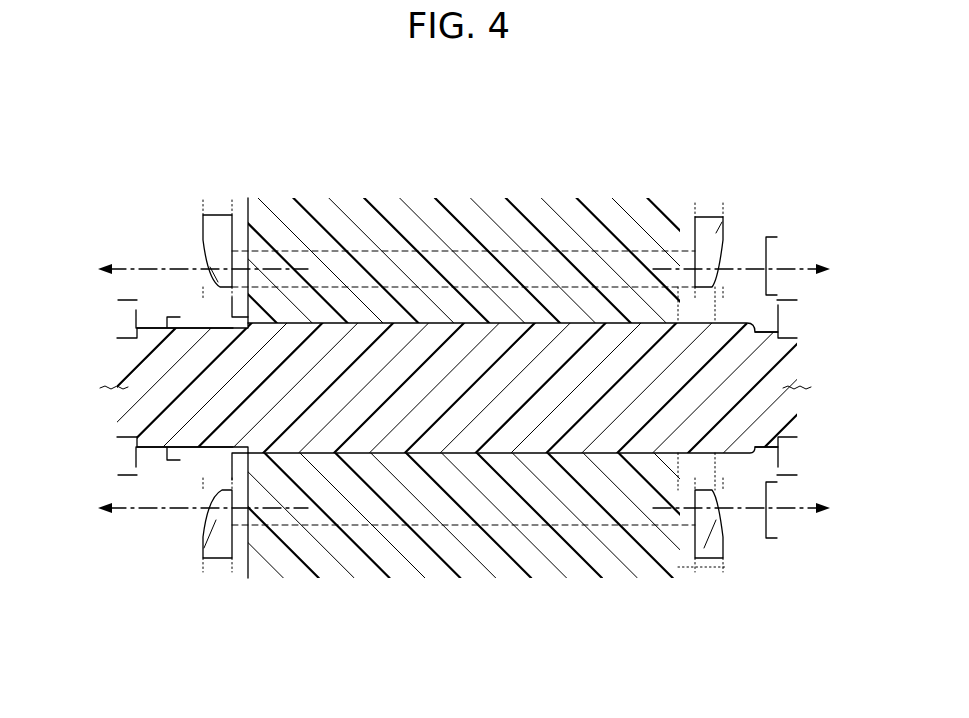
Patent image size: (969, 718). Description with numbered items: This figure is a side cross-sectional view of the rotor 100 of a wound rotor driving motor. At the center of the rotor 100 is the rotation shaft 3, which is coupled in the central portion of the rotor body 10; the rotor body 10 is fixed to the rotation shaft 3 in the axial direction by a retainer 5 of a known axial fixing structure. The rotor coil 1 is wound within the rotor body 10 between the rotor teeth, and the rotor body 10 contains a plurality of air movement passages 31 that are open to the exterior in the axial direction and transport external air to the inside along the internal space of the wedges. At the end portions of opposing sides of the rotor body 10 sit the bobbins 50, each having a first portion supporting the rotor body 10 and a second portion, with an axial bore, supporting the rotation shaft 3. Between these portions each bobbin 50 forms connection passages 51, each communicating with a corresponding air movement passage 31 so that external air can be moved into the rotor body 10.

The rotor 100 is at (482, 105).
The rotor coil 1 is at (715, 232).
The rotation shaft 3 is at (752, 365).
The retainer 5 is at (693, 462).
The rotor body 10 is at (471, 594).
The air movement passage 31 is at (467, 242).
The bobbin 50 is at (217, 585).
The connection passage 51 is at (699, 195).